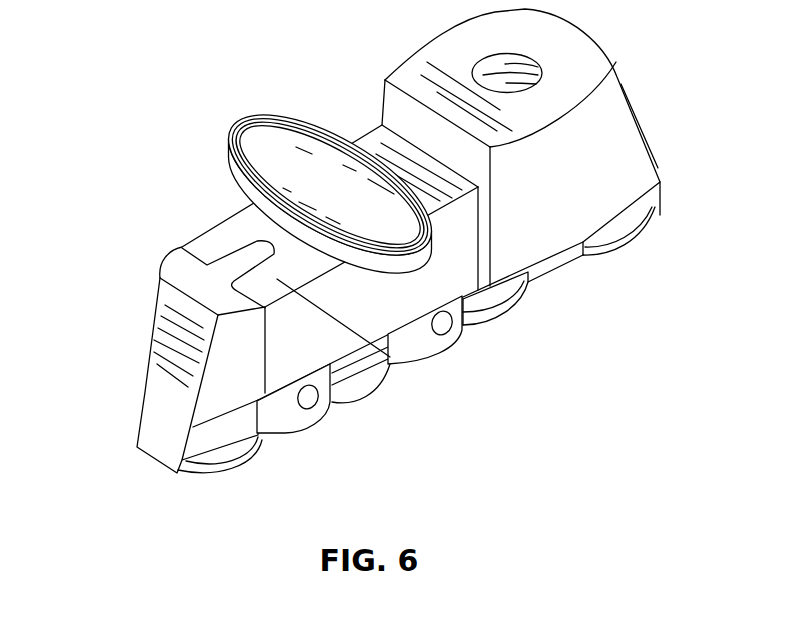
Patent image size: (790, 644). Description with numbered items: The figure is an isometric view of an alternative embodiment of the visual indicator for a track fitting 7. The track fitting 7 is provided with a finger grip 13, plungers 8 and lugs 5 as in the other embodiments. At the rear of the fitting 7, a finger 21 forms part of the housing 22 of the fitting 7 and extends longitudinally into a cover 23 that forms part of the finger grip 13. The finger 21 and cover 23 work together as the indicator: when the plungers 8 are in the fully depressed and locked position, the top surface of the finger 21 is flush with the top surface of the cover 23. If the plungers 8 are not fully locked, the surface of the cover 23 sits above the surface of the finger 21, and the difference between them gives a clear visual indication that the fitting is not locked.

The lugs 5 is at (232, 448).
The track fitting 7 is at (366, 140).
The plungers 8 is at (295, 413).
The finger grip 13 is at (260, 140).
The finger 21 is at (247, 253).
The housing 22 is at (183, 348).
The cover 23 is at (390, 357).